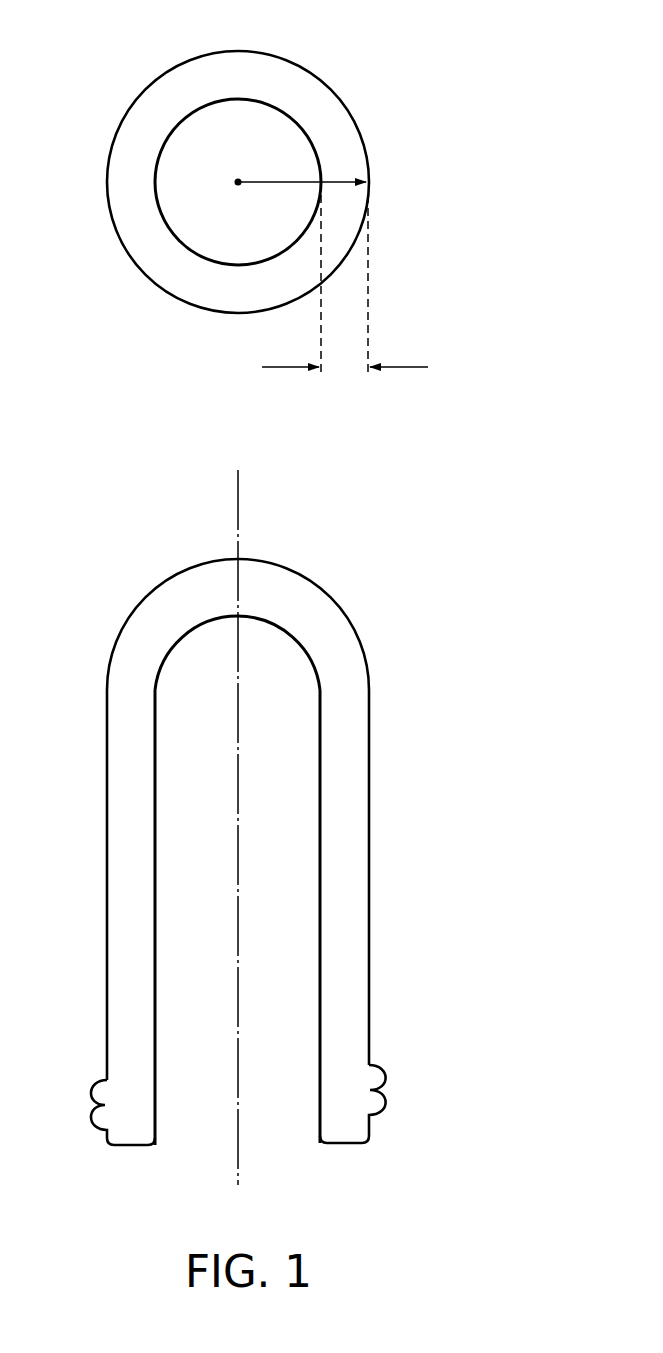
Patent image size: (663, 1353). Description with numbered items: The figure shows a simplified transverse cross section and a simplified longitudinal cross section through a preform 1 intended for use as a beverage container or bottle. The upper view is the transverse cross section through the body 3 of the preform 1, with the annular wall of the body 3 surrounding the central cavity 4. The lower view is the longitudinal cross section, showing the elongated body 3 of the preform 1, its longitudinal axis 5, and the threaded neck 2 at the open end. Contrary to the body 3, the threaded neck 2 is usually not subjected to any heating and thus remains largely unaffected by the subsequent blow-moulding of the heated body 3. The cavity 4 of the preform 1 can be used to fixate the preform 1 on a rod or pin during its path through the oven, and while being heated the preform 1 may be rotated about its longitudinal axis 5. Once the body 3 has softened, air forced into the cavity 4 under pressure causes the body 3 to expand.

The preform 1 is at (368, 160).
The threaded neck 2 is at (340, 1130).
The body 3 is at (328, 122).
The cavity 4 is at (265, 128).
The longitudinal axis 5 is at (240, 508).